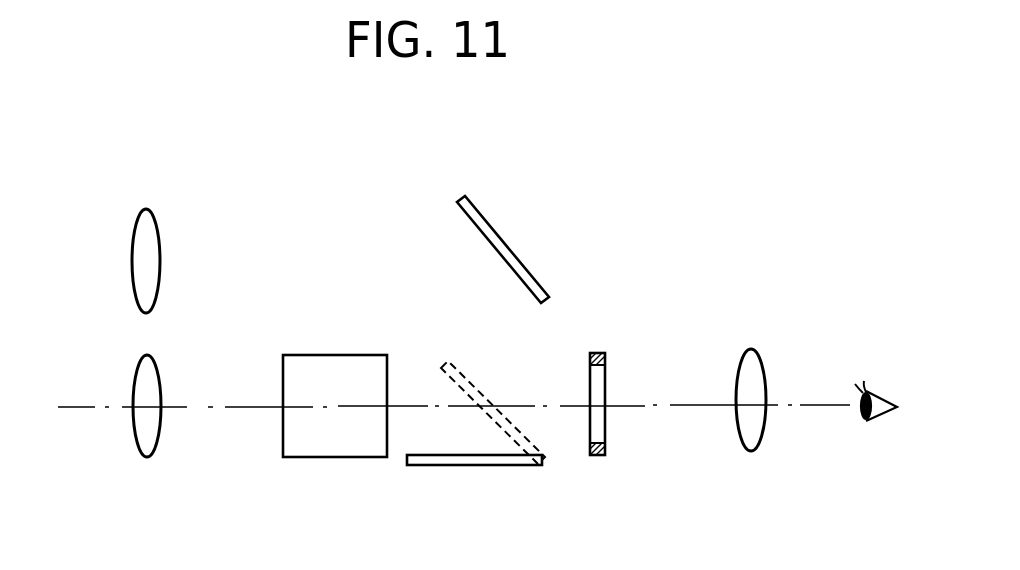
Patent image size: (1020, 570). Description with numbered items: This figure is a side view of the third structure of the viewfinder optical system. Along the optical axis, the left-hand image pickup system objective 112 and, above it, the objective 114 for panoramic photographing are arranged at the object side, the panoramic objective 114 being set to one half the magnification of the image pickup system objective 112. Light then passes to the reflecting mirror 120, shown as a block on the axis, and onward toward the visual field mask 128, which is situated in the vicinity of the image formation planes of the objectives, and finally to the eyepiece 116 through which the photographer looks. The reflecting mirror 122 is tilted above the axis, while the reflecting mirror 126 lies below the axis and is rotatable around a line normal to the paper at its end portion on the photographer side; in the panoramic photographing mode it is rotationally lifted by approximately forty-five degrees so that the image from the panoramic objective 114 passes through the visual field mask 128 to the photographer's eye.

The left-hand image pickup system objective 112 is at (152, 459).
The objective for panoramic photographing 114 is at (152, 218).
The eyepiece 116 is at (755, 348).
The reflecting mirror 120 is at (338, 451).
The reflecting mirror 122 is at (484, 213).
The reflecting mirror 126 is at (500, 468).
The visual field mask 128 is at (598, 350).